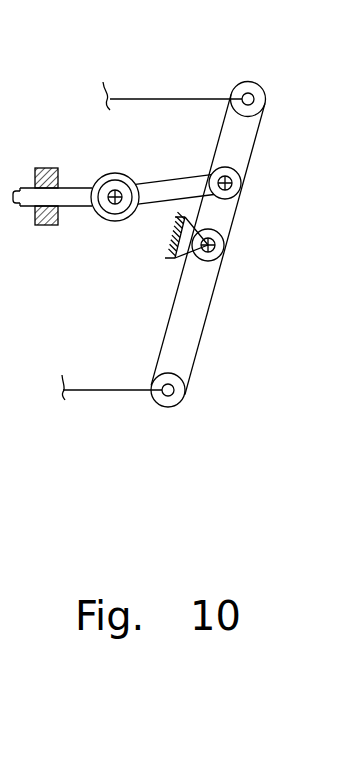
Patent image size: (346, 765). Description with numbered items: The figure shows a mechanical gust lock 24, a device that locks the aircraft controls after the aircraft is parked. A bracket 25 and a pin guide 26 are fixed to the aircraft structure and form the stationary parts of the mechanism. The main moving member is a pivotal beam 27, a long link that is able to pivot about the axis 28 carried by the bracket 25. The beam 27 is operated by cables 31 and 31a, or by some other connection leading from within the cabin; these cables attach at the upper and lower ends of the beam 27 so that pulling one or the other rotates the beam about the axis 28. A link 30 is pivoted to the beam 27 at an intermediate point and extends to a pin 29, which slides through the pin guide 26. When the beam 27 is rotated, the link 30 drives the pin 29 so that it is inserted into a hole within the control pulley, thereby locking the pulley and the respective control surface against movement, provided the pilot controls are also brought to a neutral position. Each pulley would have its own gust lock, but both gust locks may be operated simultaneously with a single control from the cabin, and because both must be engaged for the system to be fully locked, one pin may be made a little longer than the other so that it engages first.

The mechanical gust lock 24 is at (233, 412).
The bracket 25 is at (187, 256).
The pin guide 26 is at (43, 167).
The pivotal beam 27 is at (192, 295).
The axis 28 is at (215, 249).
The pin 29 is at (73, 204).
The link 30 is at (150, 185).
The cable 31 is at (142, 99).
The cable 31a is at (98, 388).